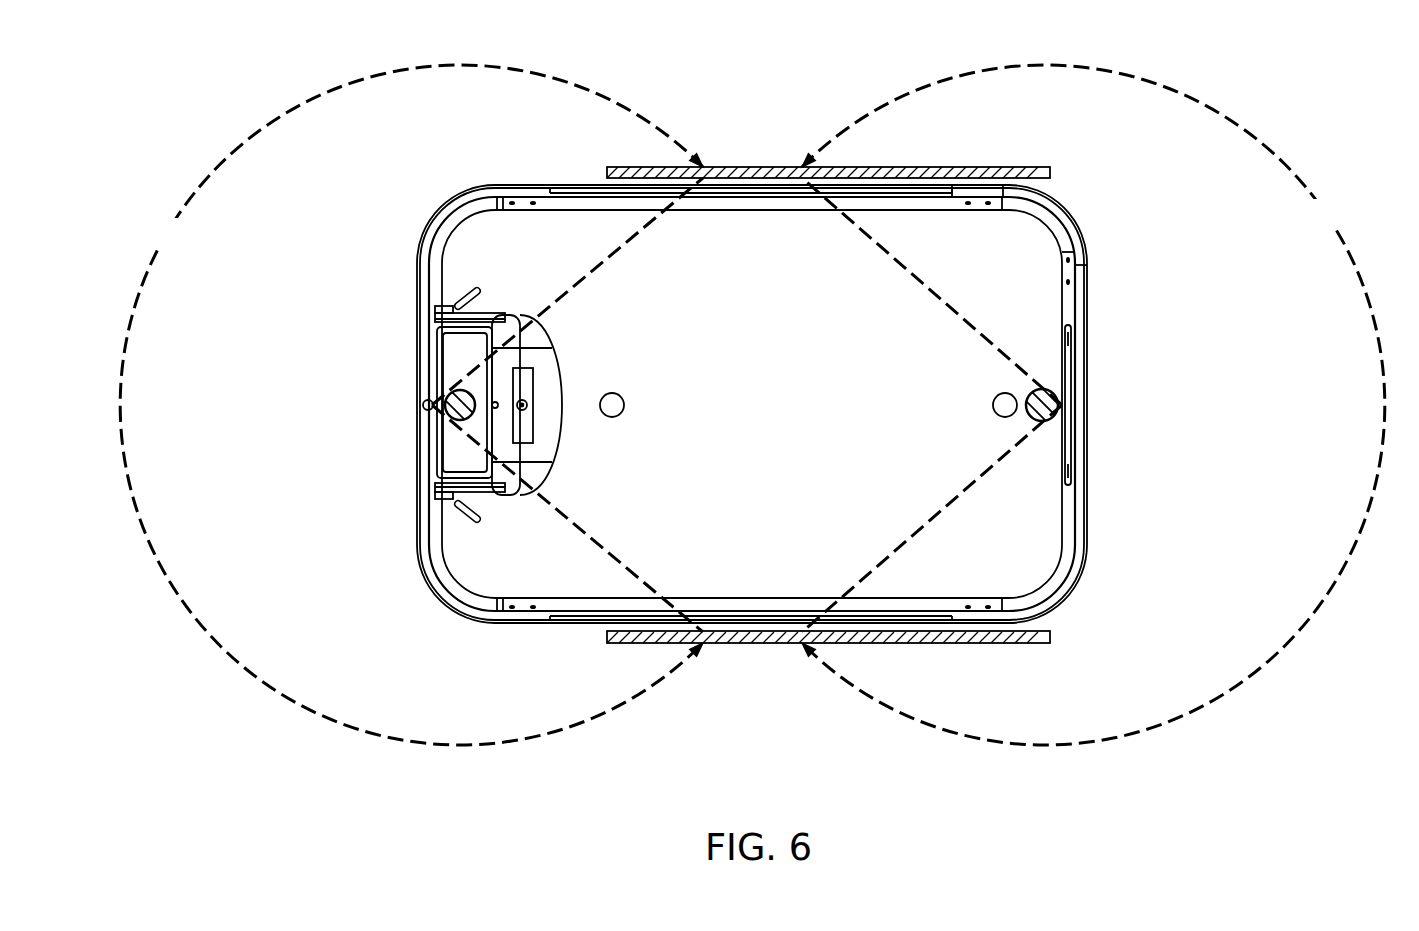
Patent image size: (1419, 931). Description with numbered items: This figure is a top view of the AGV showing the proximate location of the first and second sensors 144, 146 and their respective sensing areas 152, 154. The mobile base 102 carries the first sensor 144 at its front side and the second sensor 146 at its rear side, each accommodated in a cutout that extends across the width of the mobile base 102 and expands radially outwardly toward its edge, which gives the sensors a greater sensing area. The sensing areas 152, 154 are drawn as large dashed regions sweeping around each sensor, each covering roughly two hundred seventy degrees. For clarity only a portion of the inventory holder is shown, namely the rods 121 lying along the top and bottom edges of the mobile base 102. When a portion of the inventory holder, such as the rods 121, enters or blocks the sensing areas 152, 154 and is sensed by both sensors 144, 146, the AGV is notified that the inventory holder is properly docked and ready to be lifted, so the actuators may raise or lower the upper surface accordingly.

The mobile base 102 is at (1100, 247).
The rods 121 is at (748, 165).
The first sensor 144 is at (447, 418).
The second sensor 146 is at (1062, 405).
The sensing area 152 is at (322, 92).
The sensing area 154 is at (978, 70).